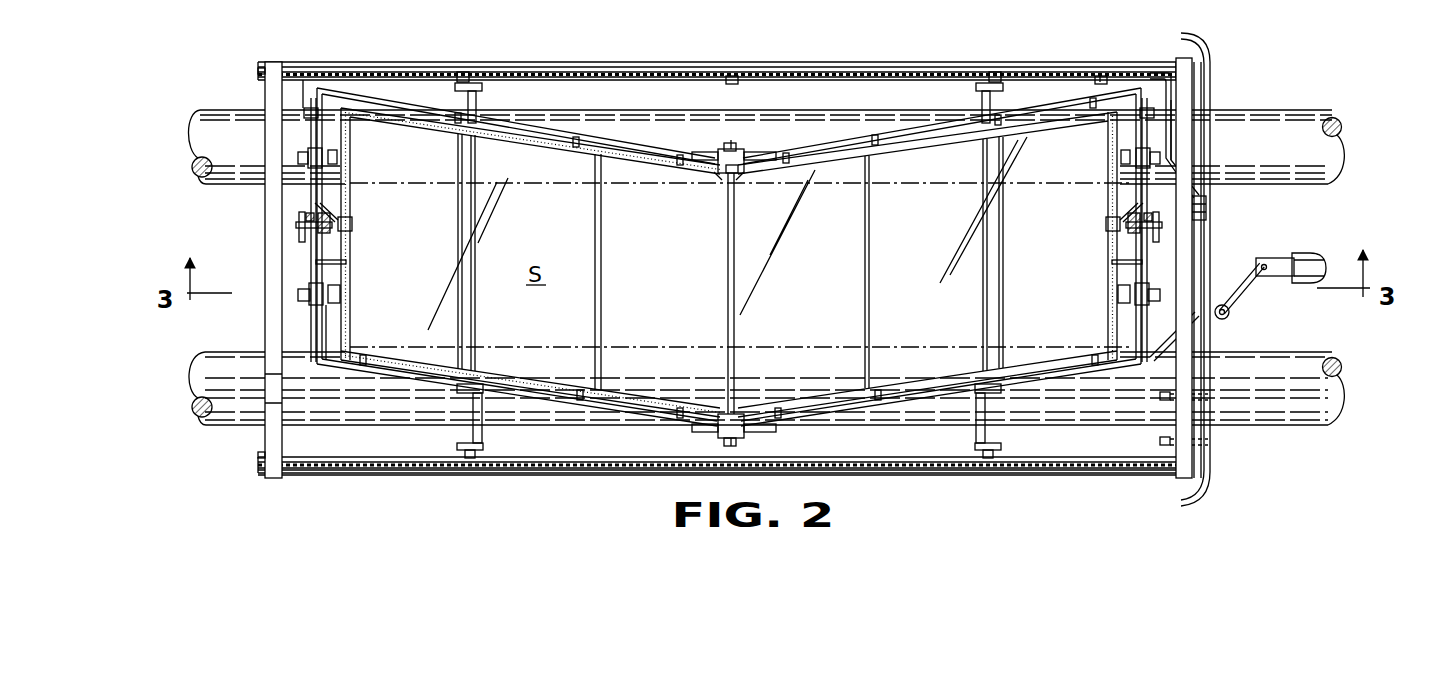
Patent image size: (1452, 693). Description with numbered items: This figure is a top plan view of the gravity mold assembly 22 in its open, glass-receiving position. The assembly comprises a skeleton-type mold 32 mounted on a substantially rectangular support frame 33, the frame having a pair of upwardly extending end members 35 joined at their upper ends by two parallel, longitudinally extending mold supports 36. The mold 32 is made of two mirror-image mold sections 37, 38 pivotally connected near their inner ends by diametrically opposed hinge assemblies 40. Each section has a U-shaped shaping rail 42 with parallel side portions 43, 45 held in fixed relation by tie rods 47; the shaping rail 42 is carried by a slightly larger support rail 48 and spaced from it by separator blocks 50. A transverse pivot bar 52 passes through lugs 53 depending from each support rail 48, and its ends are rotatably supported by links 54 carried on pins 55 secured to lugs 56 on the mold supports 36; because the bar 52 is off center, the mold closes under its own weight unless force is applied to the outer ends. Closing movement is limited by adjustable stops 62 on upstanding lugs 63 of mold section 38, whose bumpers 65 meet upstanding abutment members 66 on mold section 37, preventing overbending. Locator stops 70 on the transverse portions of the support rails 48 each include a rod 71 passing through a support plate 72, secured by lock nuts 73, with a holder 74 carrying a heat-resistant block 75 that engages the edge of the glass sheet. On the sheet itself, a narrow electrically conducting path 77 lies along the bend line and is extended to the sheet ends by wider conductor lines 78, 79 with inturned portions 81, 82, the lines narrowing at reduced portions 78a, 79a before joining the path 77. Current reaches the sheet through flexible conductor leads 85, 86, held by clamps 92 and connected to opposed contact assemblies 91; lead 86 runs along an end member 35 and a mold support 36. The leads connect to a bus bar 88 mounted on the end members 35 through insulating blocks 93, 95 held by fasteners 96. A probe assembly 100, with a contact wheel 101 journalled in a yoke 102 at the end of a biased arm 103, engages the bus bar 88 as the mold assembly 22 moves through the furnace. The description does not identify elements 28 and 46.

The mold assembly 22 is at (232, 52).
The pipe roll 28 is at (195, 145).
The skeleton-type mold 32 is at (940, 456).
The support frame 33 is at (890, 478).
The end members 35 is at (270, 437).
The mold supports 36 is at (652, 62).
The mold section 37 is at (933, 118).
The mold section 38 is at (538, 118).
The hinge assemblies 40 is at (722, 299).
The shaping rail 42 is at (868, 143).
The side portion 43 is at (593, 155).
The side portion 45 is at (520, 386).
The nut 46 is at (330, 168).
The tie rods 47 is at (456, 228).
The support rail 48 is at (1040, 108).
The separator blocks 50 is at (335, 368).
The pivot bar 52 is at (470, 415).
The lugs 53 is at (453, 105).
The links 54 is at (481, 84).
The pins 55 is at (455, 78).
The lugs 56 is at (462, 72).
The adjustable stops 62 is at (717, 148).
The upstanding lugs 63 is at (707, 157).
The bumpers 65 is at (740, 173).
The abutment members 66 is at (757, 153).
The locator stops 70 is at (303, 142).
The rod 71 is at (300, 296).
The support plate 72 is at (325, 330).
The lock nuts 73 is at (325, 286).
The holder 74 is at (333, 290).
The block 75 is at (343, 296).
The electrically conducting path 77 is at (728, 278).
The conductor line 78 is at (823, 397).
The reduced cross-sectional area portion 78a is at (742, 418).
The conductor line 79 is at (516, 145).
The reduced cross-sectional area portion 79a is at (720, 182).
The inturned portion 81 is at (1113, 337).
The inturned portion 82 is at (350, 190).
The flexible conductor lead 85 is at (1187, 327).
The flexible conductor lead 86 is at (792, 72).
The bus bar 88 is at (1210, 167).
The contact assemblies 91 is at (296, 225).
The clamps 92 is at (300, 108).
The insulating block 93 is at (1205, 78).
The insulating block 95 is at (1203, 145).
The fasteners 96 is at (1162, 440).
The probe assembly 100 is at (1303, 267).
The contact wheel 101 is at (1218, 302).
The yoke 102 is at (1232, 315).
The arm 103 is at (1262, 283).